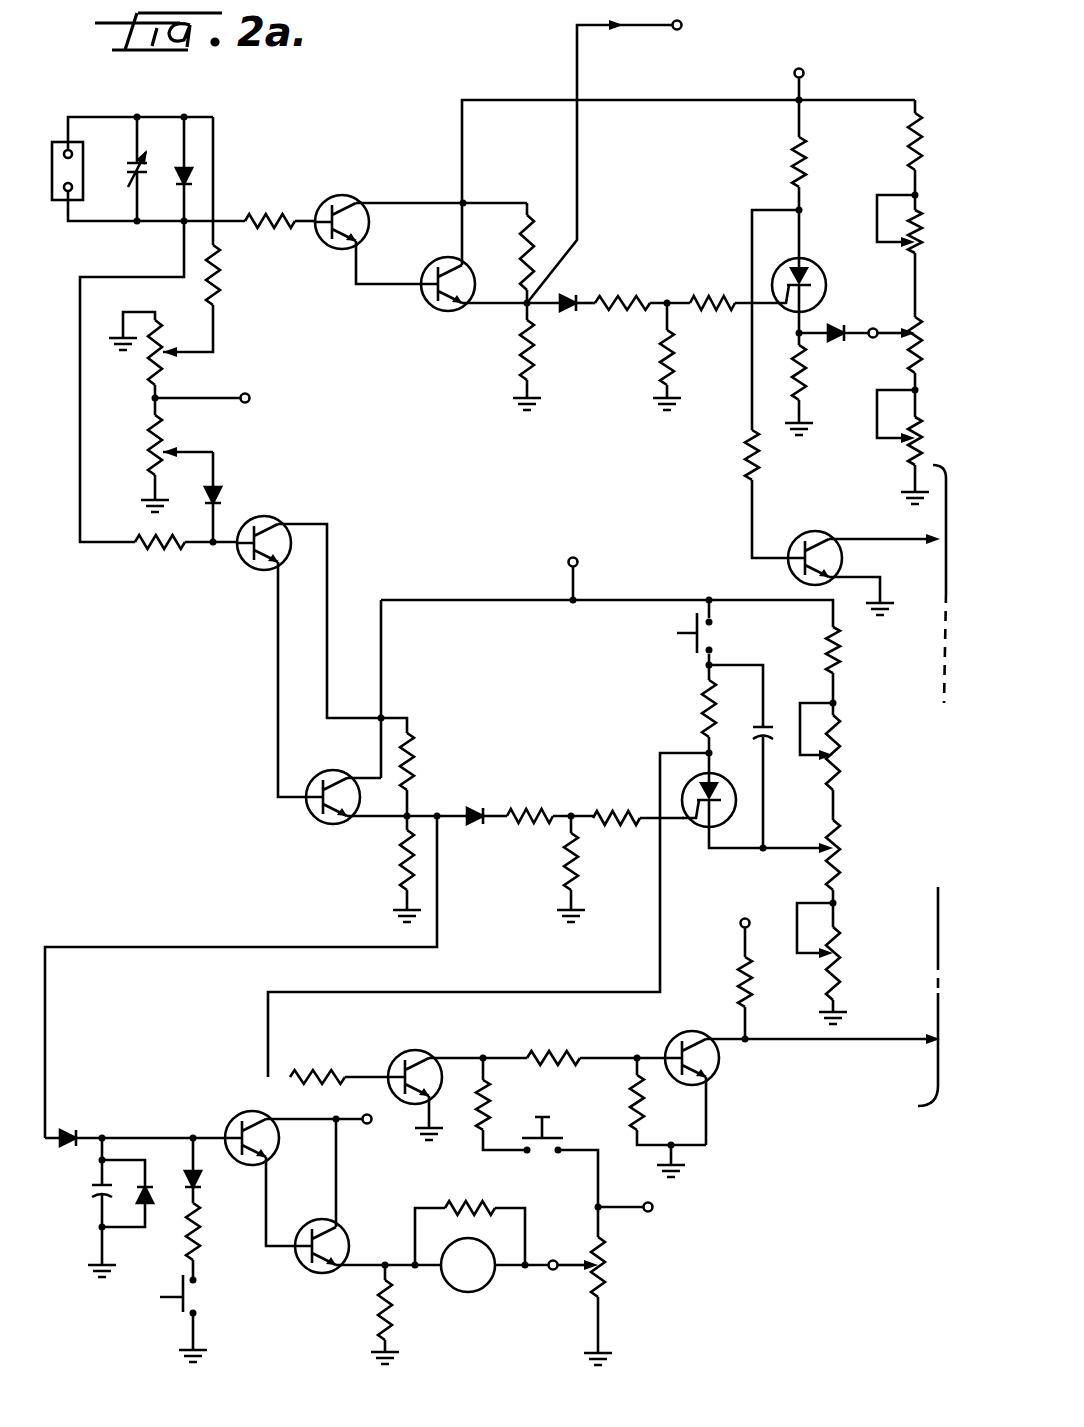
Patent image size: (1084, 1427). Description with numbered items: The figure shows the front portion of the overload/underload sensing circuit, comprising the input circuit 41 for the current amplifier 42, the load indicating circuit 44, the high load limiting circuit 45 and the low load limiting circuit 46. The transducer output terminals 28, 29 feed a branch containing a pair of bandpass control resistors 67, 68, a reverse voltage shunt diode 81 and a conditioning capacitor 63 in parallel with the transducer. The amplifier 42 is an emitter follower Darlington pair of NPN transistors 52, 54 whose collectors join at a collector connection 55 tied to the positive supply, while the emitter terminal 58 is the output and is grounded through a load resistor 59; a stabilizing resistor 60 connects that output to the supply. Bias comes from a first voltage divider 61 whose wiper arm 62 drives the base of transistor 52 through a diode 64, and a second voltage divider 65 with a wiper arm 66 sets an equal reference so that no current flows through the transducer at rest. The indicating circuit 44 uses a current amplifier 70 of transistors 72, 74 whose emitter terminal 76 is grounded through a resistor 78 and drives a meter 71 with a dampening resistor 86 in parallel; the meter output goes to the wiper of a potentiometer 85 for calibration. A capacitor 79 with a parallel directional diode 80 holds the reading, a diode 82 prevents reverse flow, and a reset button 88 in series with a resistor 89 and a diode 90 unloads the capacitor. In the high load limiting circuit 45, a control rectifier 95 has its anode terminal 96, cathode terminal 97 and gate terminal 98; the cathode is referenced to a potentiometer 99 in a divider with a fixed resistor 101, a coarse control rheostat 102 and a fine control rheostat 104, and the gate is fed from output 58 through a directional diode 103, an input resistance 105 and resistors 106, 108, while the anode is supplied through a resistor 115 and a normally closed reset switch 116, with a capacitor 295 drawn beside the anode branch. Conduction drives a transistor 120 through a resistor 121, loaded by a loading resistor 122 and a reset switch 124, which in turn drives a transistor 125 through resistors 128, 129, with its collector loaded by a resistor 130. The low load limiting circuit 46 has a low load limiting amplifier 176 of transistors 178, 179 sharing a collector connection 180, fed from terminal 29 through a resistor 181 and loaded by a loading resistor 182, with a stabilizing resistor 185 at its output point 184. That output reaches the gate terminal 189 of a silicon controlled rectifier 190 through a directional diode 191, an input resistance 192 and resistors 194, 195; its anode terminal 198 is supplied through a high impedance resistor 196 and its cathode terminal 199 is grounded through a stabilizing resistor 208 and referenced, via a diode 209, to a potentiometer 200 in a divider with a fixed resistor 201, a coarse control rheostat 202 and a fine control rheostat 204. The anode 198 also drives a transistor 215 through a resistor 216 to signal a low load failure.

The output terminal of the transducer 28 is at (82, 140).
The transducer terminal 29 is at (66, 192).
The input circuit 41 is at (248, 358).
The current amplifier 42 is at (188, 768).
The load indicating circuit 44 is at (680, 1255).
The high load limiting circuit 45 is at (493, 575).
The low load limiting circuit 46 is at (684, 434).
The first transistor 52 is at (246, 566).
The second transistor 54 is at (310, 820).
The collector connection 55 is at (384, 716).
The emitter terminal 58 is at (405, 820).
The load resistor 59 is at (400, 862).
The resistor 60 is at (416, 758).
The first voltage divider 61 is at (150, 456).
The wiper arm 62 is at (200, 452).
The conditioning capacitor 63 is at (127, 160).
The diode 64 is at (220, 490).
The second voltage divider 65 is at (150, 372).
The wiper arm 66 is at (193, 354).
The bandpass control resistor 67 is at (220, 280).
The bandpass control resistor 68 is at (160, 546).
The current amplifier 70 is at (328, 1170).
The meter 71 is at (486, 1292).
The first transistor 72 is at (252, 1112).
The second transistor 74 is at (340, 1226).
The emitter terminal 76 is at (338, 1276).
The resistor 78 is at (390, 1320).
The capacitor 79 is at (100, 1197).
The directional diode 80 is at (146, 1185).
The reverse voltage shunt diode 81 is at (190, 170).
The diode 82 is at (72, 1130).
The potentiometer 85 is at (606, 1286).
The dampening resistor 86 is at (470, 1208).
The reset button 88 is at (200, 1297).
The resistor 89 is at (199, 1228).
The diode 90 is at (200, 1170).
The control rectifier 95 is at (684, 816).
The anode terminal 96 is at (706, 772).
The cathode terminal 97 is at (692, 850).
The gate terminal 98 is at (686, 822).
The potentiometer 99 is at (840, 850).
The fixed resistor 101 is at (840, 662).
The coarse control rheostat 102 is at (842, 768).
The directional diode 103 is at (478, 808).
The fine control rheostat 104 is at (845, 970).
The input resistance 105 is at (622, 816).
The resistor 106 is at (546, 816).
The resistor 108 is at (565, 860).
The resistor 115 is at (706, 706).
The normally closed reset switch 116 is at (715, 637).
The transistor 120 is at (422, 1052).
The resistor 121 is at (318, 1077).
The loading resistor 122 is at (490, 1096).
The normally closed reset switch 124 is at (548, 1160).
The transistor 125 is at (720, 1066).
The resistor 128 is at (560, 1058).
The resistor 129 is at (635, 1106).
The resistor 130 is at (745, 990).
The low load limiting amplifier 176 is at (430, 235).
The first transistor 178 is at (343, 196).
The second transistor 179 is at (428, 300).
The collector connection 180 is at (466, 203).
The resistor 181 is at (282, 221).
The loading resistor 182 is at (527, 352).
The output point 184 is at (658, 27).
The stabilizing resistor 185 is at (565, 228).
The gate terminal 189 is at (772, 308).
The silicon controlled rectifier 190 is at (826, 280).
The directional diode 191 is at (572, 306).
The input resistance 192 is at (712, 303).
The resistor 194 is at (627, 303).
The resistor 195 is at (667, 360).
The high impedance resistor 196 is at (799, 162).
The anode terminal 198 is at (800, 232).
The cathode terminal 199 is at (830, 330).
The potentiometer 200 is at (910, 352).
The fixed resistor 201 is at (914, 142).
The coarse control rheostat 202 is at (900, 240).
The fine control rheostat 204 is at (912, 458).
The stabilizing resistor 208 is at (790, 372).
The diode 209 is at (846, 340).
The transistor 215 is at (843, 558).
The resistor 216 is at (754, 478).
The capacitor 295 is at (770, 746).